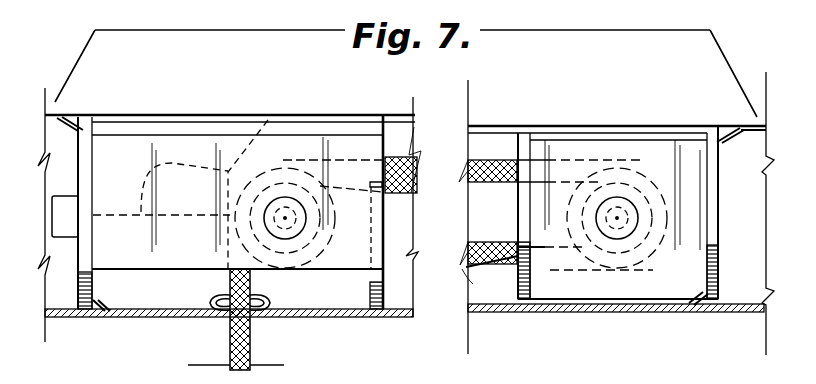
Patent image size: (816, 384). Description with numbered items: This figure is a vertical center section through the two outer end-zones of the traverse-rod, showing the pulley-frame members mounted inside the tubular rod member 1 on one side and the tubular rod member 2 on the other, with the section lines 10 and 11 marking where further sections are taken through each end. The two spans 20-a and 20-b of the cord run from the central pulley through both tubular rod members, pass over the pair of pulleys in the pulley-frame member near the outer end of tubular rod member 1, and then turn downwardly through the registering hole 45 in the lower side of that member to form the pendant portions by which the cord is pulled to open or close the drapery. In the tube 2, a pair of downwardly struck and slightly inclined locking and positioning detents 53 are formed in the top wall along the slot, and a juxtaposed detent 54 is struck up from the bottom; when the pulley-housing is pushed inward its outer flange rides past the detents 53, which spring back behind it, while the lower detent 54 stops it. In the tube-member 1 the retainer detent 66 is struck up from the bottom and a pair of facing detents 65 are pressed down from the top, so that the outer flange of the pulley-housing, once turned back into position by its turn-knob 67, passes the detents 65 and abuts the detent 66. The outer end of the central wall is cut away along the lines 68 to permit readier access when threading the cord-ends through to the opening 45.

The tubular rod member 1 is at (163, 316).
The tubular rod member 2 is at (742, 308).
The section line 10- 10 is at (398, 145).
The section line 11- 11 is at (646, 99).
The span of the cord 20-a is at (486, 160).
The span of the cord 20-b is at (471, 268).
The registering hole 45 is at (268, 302).
The locking and positioning tongues or detents 53 is at (731, 142).
The tongue or detent 54 is at (690, 300).
The detents 65 is at (62, 132).
The retainer finger or detent 66 is at (101, 308).
The turn-knob 67 is at (52, 215).
The cut-away lines 68 is at (151, 184).